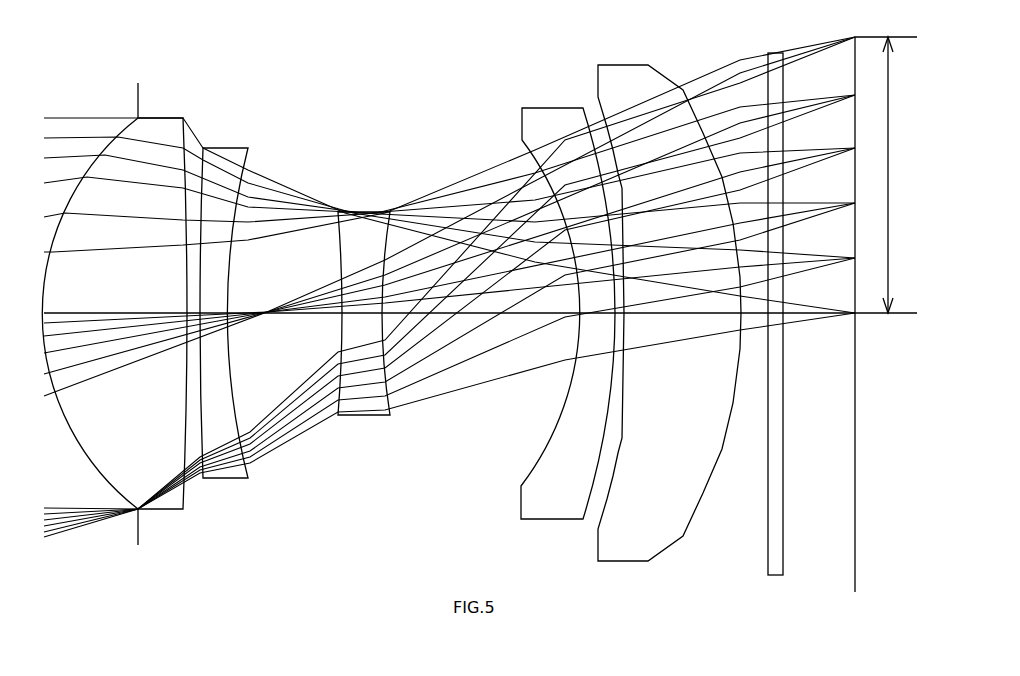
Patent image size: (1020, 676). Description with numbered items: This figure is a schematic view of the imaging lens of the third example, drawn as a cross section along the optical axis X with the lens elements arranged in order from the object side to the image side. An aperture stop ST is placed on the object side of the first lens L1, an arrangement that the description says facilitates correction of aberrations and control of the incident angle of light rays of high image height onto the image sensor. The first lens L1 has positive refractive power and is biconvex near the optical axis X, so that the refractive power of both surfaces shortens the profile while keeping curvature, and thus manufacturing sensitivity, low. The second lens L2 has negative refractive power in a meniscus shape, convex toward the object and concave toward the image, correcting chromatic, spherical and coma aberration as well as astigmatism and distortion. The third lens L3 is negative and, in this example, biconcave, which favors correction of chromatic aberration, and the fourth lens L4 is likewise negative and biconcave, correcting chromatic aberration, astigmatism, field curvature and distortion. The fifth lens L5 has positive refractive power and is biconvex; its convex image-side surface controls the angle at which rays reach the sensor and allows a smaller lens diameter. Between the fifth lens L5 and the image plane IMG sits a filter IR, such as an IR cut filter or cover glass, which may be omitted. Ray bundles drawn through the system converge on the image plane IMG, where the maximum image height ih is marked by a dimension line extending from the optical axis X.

The aperture stop ST is at (138, 103).
The first lens L1 is at (177, 118).
The second lens L2 is at (230, 148).
The third lens L3 is at (386, 212).
The fourth lens L4 is at (522, 108).
The fifth lens L5 is at (632, 65).
The filter IR is at (769, 53).
The image plane IMG is at (855, 575).
The optical axis X is at (107, 313).
The maximum image height ih is at (879, 175).